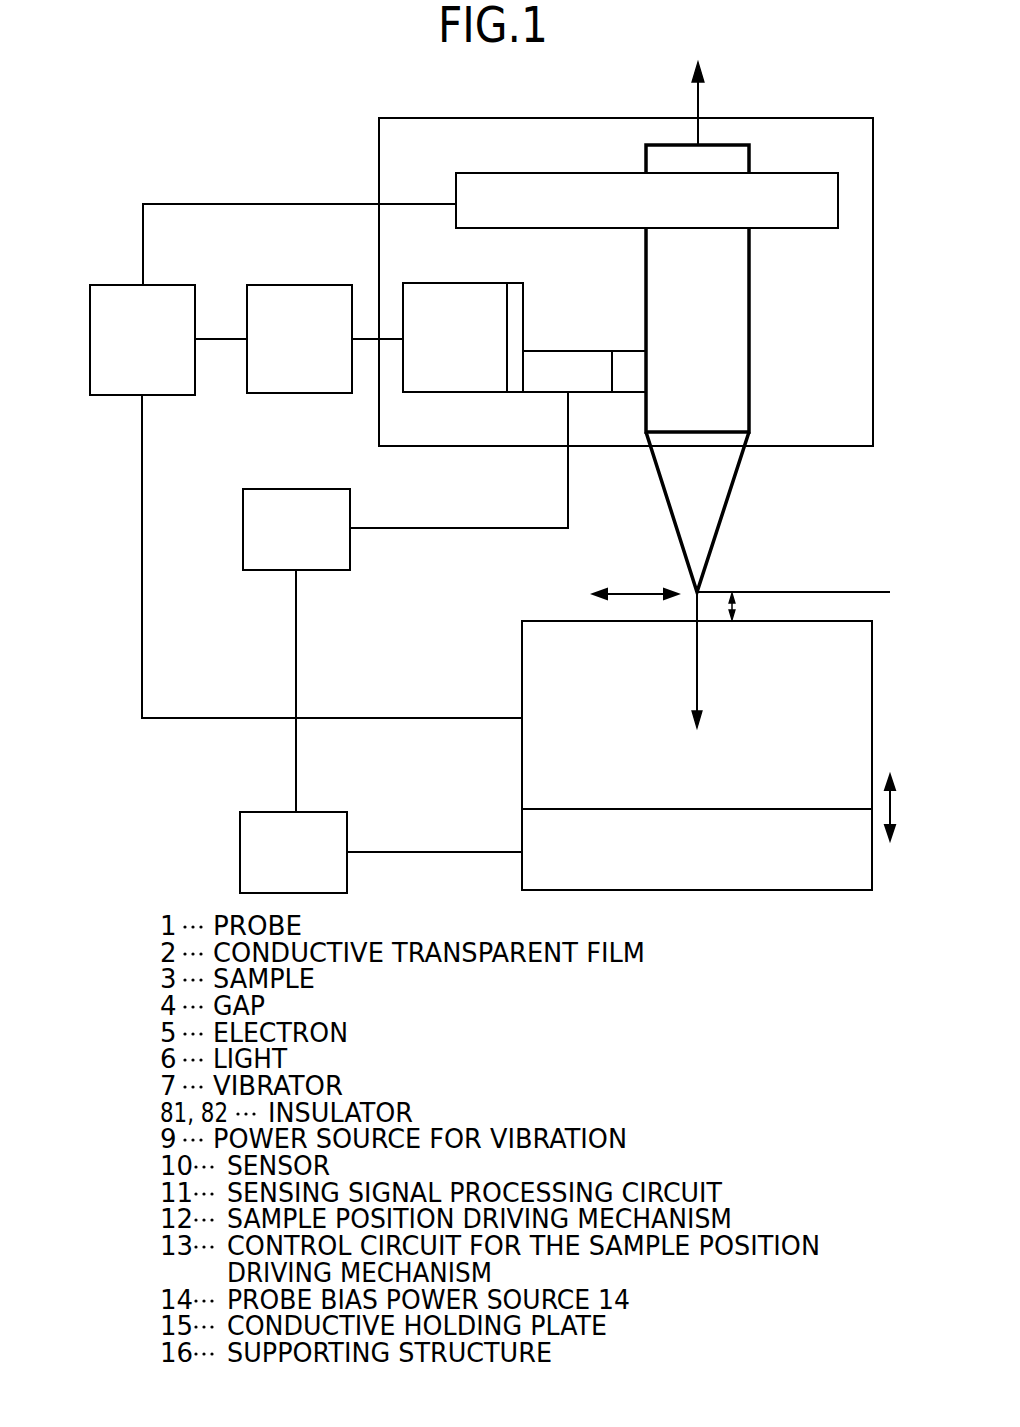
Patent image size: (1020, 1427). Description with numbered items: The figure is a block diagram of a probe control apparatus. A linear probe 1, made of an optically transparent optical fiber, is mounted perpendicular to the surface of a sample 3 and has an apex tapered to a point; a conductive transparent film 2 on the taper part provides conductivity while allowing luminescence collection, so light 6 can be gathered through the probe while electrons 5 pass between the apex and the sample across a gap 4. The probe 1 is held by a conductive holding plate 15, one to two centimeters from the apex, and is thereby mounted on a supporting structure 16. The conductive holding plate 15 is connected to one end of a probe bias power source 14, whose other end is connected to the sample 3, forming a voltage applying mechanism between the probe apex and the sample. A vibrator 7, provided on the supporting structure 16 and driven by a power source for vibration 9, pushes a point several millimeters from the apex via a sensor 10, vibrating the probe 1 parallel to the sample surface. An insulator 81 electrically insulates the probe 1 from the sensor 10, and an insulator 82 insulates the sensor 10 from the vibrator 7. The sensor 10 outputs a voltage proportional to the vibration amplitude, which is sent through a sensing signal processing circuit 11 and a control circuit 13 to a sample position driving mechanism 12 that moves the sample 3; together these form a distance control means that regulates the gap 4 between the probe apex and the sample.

The probe 1 is at (739, 368).
The conductive transparent film 2 is at (715, 497).
The sample 3 is at (522, 664).
The gap 4 is at (738, 602).
The electron 5 is at (700, 727).
The light 6 is at (698, 94).
The vibrator 7 is at (420, 282).
The insulator 81 is at (637, 352).
The insulator 82 is at (528, 300).
The power source for vibration 9 is at (334, 285).
The sensor 10 is at (552, 388).
The sensing signal processing circuit 11 is at (316, 489).
The sample position driving mechanism 12 is at (522, 826).
The control circuit for the sample position driving mechanism 13 is at (245, 853).
The probe bias power source 14 is at (178, 285).
The conductive holding plate 15 is at (595, 223).
The supporting structure 16 is at (805, 118).